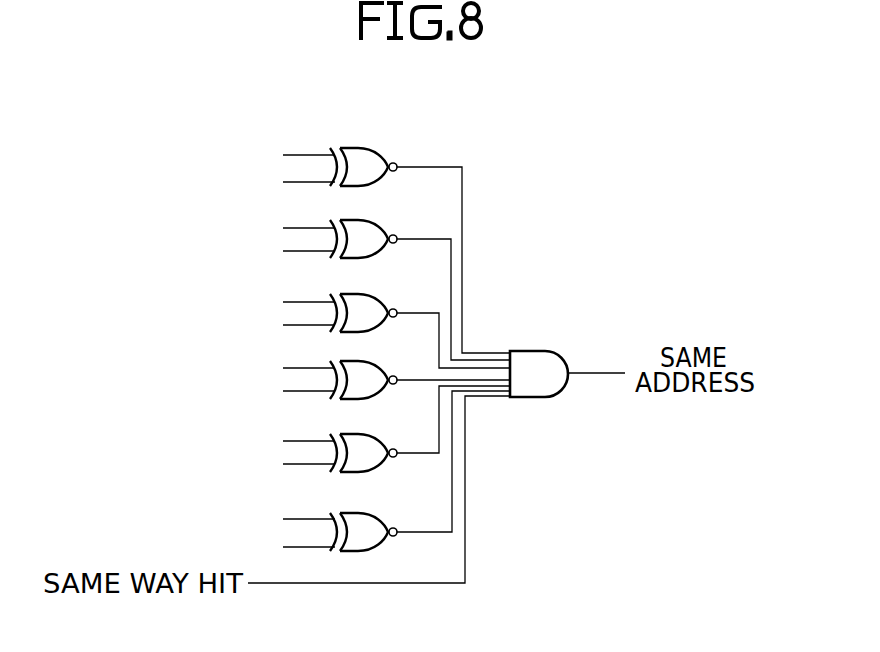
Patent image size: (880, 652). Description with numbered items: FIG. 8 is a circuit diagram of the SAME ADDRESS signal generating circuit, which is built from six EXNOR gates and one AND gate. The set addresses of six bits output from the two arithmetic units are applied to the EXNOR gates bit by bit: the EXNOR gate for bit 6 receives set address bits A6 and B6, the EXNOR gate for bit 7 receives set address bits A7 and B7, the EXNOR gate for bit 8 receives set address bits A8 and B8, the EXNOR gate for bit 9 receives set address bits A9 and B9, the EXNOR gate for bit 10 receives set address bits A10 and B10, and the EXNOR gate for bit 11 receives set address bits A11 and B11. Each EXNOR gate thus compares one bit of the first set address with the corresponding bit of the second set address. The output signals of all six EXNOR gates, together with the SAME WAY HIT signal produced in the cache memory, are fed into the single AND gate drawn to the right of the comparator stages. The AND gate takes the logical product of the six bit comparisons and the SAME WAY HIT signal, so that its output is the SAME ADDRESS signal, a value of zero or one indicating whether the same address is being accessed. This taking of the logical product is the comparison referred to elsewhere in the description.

The XNOR comparator for address bit 6 is at (372, 245).
The XNOR comparator for address bit 7 is at (372, 284).
The XNOR comparator for address bit 8 is at (372, 326).
The XNOR comparator for address bit 9 is at (372, 381).
The XNOR comparator for address bit 10 is at (372, 433).
The XNOR comparator for address bit 11 is at (372, 477).
The set address bit A6 is at (284, 153).
The set address bit B6 is at (284, 179).
The set address bit A7 is at (284, 224).
The set address bit B7 is at (284, 249).
The set address bit A8 is at (284, 299).
The set address bit B8 is at (284, 329).
The set address bit A9 is at (284, 365).
The set address bit B9 is at (284, 398).
The set address bit A10 is at (284, 439).
The set address bit B10 is at (284, 465).
The set address bit A11 is at (284, 519).
The set address bit B11 is at (284, 548).